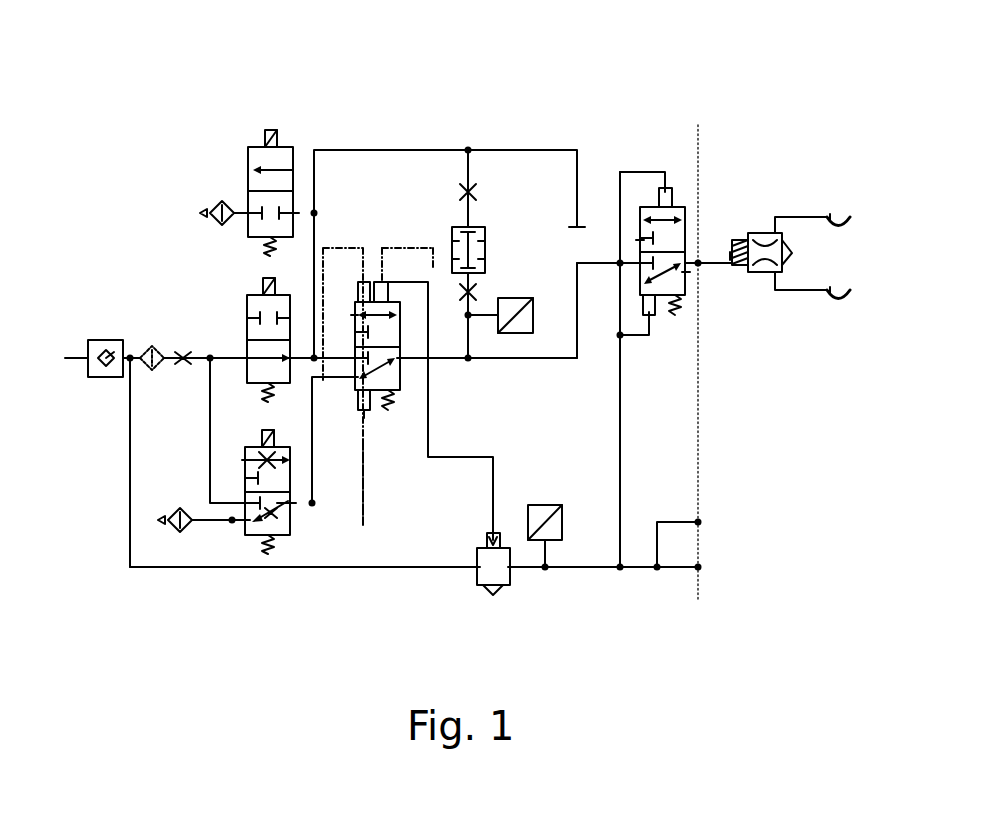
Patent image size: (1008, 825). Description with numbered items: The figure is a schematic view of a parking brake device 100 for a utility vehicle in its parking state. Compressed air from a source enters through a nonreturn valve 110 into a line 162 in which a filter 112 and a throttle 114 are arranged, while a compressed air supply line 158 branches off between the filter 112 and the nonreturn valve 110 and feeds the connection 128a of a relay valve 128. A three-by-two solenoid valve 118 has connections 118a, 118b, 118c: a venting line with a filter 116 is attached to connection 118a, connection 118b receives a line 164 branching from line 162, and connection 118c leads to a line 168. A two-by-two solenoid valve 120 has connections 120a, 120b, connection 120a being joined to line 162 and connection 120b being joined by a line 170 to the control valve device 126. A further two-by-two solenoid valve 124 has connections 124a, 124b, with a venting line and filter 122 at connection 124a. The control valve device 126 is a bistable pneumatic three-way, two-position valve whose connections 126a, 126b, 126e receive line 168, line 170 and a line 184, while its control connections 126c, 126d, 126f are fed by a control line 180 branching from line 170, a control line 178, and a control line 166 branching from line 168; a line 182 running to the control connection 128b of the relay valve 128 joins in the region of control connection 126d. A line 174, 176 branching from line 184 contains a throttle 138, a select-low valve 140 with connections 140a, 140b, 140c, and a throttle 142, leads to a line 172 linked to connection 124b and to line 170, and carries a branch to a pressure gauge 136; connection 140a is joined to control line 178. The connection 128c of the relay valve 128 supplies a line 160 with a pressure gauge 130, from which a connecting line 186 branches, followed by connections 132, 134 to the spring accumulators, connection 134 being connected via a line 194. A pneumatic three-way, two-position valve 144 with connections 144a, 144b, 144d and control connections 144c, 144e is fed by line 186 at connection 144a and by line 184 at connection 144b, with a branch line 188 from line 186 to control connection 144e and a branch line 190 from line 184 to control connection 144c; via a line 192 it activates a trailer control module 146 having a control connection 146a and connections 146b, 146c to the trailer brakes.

The parking brake device 100 is at (500, 97).
The nonreturn valve 110 is at (108, 340).
The filter 112 is at (148, 346).
The throttle 114 is at (183, 352).
The filter 116 is at (178, 508).
The 3/2 solenoid valve 118 is at (251, 519).
The connection 118a is at (250, 520).
The connection 118b is at (235, 490).
The connection 118c is at (290, 505).
The 2/2 solenoid valve 120 is at (254, 328).
The connection 120a is at (245, 355).
The connection 120b is at (292, 340).
The filter 122 is at (208, 213).
The 2/2 solenoid valve 124 is at (277, 171).
The connection 124a is at (246, 210).
The connection 124b is at (298, 210).
The control valve device 126 is at (393, 386).
The connection 126a is at (354, 380).
The connection 126b is at (352, 316).
The control connection 126c is at (356, 290).
The control connection 126d is at (388, 284).
The connection 126e is at (405, 360).
The control connection 126f is at (366, 412).
The relay valve 128 is at (493, 550).
The connection 128a is at (476, 565).
The control connection 128b is at (490, 533).
The connection 128c is at (512, 572).
The pressure gauge 130 is at (545, 505).
The connection 132 is at (702, 568).
The connection 134 is at (702, 523).
The pressure gauge 136 is at (525, 298).
The throttle 138 is at (475, 292).
The select-low valve 140 is at (474, 240).
The connection 140a is at (452, 245).
The connection 140b is at (472, 226).
The connection 140c is at (466, 292).
The throttle 142 is at (460, 192).
The valve 144 is at (672, 234).
The connection 144a is at (640, 275).
The connection 144b is at (640, 245).
The control connection 144c is at (668, 186).
The connection 144d is at (686, 278).
The control connection 144e is at (651, 318).
The trailer control module 146 is at (770, 252).
The control connection 146a is at (736, 268).
The connection 146b is at (790, 232).
The connection 146c is at (790, 282).
The compressed air supply line 158 is at (212, 570).
The line 160 is at (580, 565).
The line 162 is at (163, 370).
The line 164 is at (212, 405).
The control line 166 is at (363, 520).
The line 168 is at (314, 430).
The line 170 is at (296, 365).
The line 172 is at (402, 148).
The line 174 is at (472, 160).
The line 176 is at (480, 335).
The control line 178 is at (382, 248).
The control line 180 is at (323, 248).
The line 182 is at (430, 395).
The line 184 is at (578, 375).
The connecting line 186 is at (622, 428).
The branch line 188 is at (622, 342).
The branch line 190 is at (642, 172).
The line 192 is at (699, 258).
The line 194 is at (660, 520).